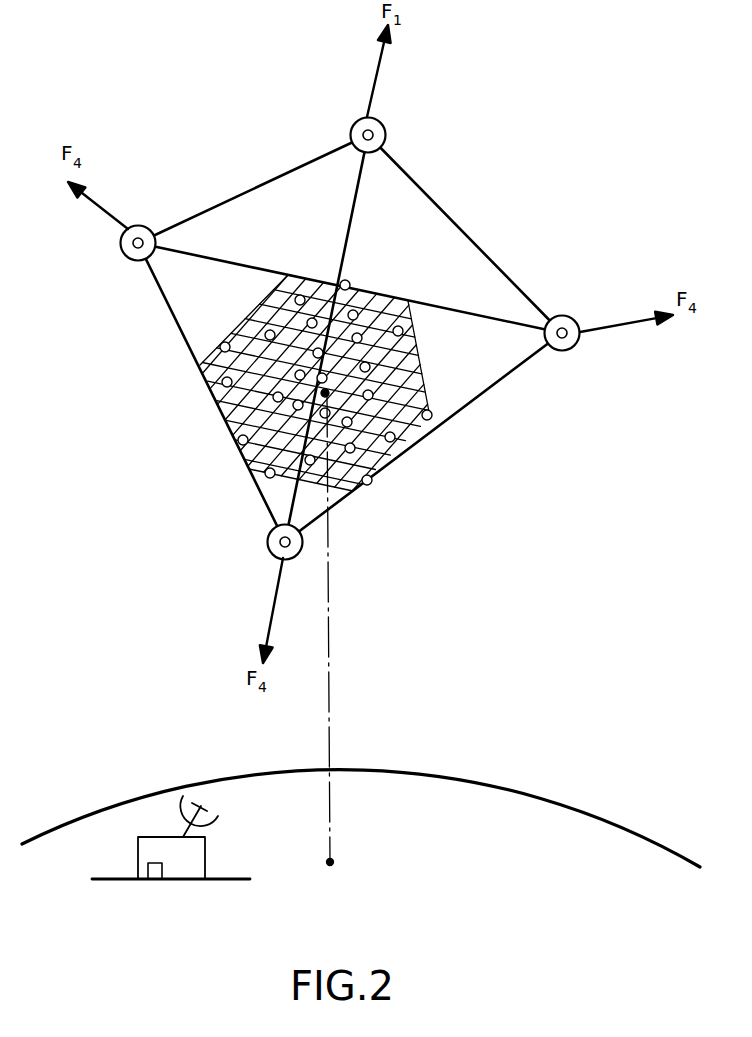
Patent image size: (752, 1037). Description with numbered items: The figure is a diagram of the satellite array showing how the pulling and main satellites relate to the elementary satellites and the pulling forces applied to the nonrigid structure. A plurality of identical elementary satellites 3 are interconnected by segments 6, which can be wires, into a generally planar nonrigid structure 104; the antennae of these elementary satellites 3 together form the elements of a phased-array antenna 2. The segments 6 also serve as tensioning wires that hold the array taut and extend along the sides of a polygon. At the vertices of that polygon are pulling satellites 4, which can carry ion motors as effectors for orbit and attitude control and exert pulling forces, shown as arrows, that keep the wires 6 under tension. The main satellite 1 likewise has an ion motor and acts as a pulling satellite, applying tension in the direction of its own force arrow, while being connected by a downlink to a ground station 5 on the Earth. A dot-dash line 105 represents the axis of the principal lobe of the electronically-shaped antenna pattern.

The main satellite 1 is at (382, 118).
The phased-array antenna 2 is at (420, 378).
The elementary satellites 3 is at (358, 318).
The pulling satellites 4 is at (142, 227).
The ground station 5 is at (205, 857).
The segments 6 is at (238, 260).
The nonrigid structure 104 is at (383, 500).
The dot-dash line 105 is at (330, 653).